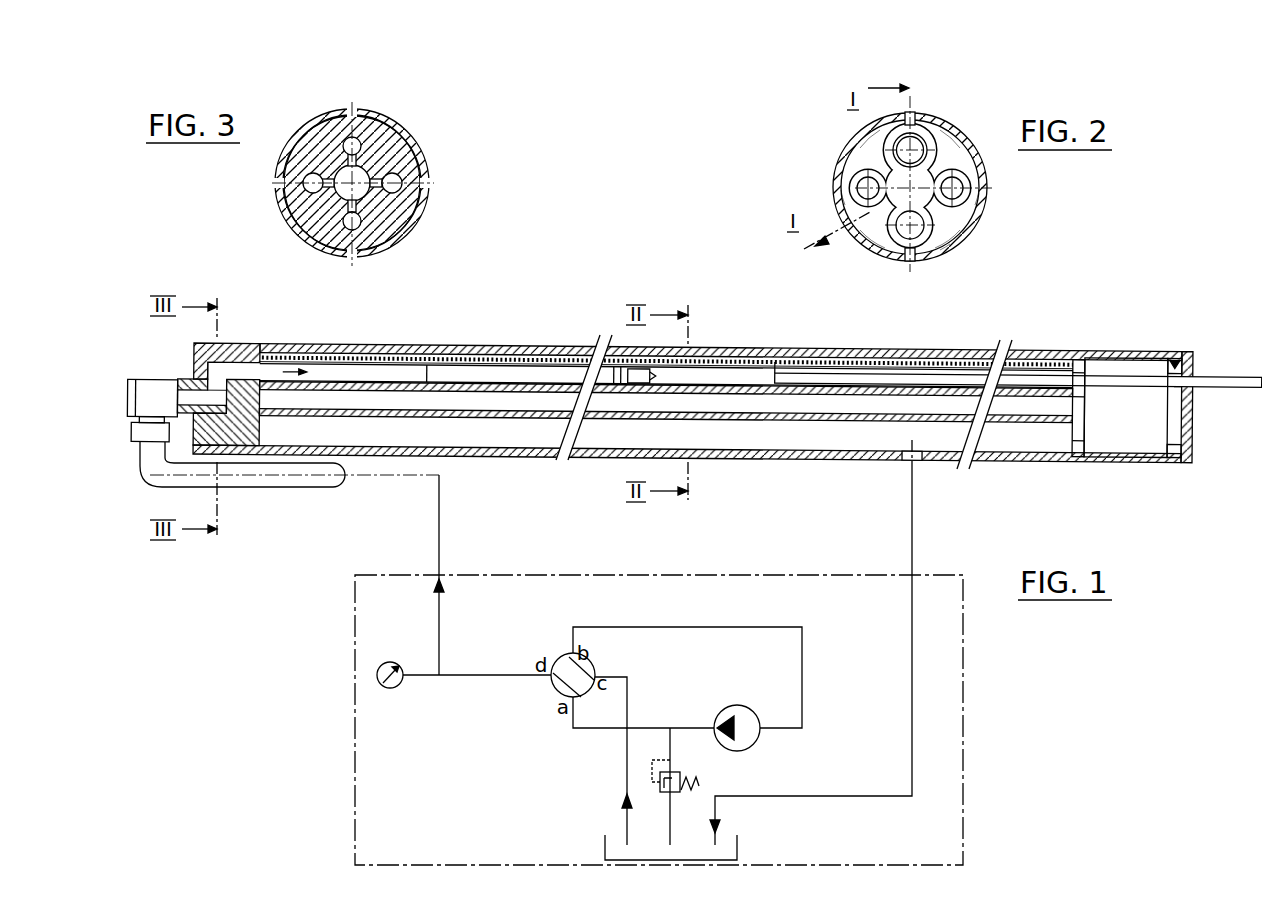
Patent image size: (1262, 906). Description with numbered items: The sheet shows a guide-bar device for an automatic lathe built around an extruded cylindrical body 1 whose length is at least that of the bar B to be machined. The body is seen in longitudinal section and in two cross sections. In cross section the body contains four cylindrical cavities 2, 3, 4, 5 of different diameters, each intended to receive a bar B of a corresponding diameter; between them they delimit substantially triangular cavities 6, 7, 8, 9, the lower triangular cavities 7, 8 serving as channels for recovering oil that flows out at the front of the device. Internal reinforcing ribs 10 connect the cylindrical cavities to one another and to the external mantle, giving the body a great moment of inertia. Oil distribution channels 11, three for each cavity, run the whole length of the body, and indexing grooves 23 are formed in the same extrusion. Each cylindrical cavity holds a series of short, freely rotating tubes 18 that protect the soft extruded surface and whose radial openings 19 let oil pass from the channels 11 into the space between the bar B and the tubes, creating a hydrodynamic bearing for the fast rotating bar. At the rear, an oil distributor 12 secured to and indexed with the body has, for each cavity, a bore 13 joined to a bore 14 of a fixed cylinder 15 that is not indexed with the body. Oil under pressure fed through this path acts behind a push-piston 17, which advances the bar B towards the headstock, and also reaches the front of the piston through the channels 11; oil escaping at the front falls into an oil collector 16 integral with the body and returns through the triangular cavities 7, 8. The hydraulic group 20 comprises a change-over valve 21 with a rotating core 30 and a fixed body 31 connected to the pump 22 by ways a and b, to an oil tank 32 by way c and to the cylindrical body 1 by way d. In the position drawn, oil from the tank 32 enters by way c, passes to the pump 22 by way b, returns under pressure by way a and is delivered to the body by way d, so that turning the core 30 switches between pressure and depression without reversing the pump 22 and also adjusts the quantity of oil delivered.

In FIG. 3, the cylindrical body 1 is at (418, 226).
In FIG. 2, the cylindrical body 1 is at (986, 233).
In FIG. 1, the cylindrical body 1 is at (396, 343).
In FIG. 2, the cylindrical cavity 2 is at (931, 152).
In FIG. 2, the cylindrical cavity 3 is at (857, 178).
In FIG. 2, the cylindrical cavity 4 is at (899, 246).
In FIG. 2, the cylindrical cavity 5 is at (962, 186).
In FIG. 2, the triangular cavity 6 is at (866, 150).
In FIG. 2, the triangular cavity 7 is at (868, 240).
In FIG. 2, the triangular cavity 8 is at (960, 220).
In FIG. 2, the triangular cavity 9 is at (955, 160).
In FIG. 2, the internal reinforcing rib 10 is at (970, 196).
In FIG. 2, the oil distribution channel 11 is at (840, 198).
In FIG. 3, the oil distributor 12 is at (314, 152).
In FIG. 1, the oil distributor 12 is at (249, 433).
In FIG. 3, the bore 13 is at (362, 140).
In FIG. 1, the bore 13 is at (255, 368).
In FIG. 3, the bore 14 is at (366, 177).
In FIG. 1, the bore 14 is at (195, 398).
In FIG. 3, the fixed cylinder 15 is at (306, 192).
In FIG. 1, the fixed cylinder 15 is at (182, 418).
In FIG. 1, the oil collector 16 is at (1128, 430).
In FIG. 1, the push-piston 17 is at (556, 372).
In FIG. 2, the tube 18 is at (914, 134).
In FIG. 1, the tube 18 is at (535, 354).
In FIG. 1, the radial opening 19 is at (452, 355).
In FIG. 1, the hydraulic group 20 is at (806, 577).
In FIG. 1, the hydraulic change-over valve 21 is at (555, 648).
In FIG. 1, the pump 22 is at (745, 712).
In FIG. 2, the indexing groove 23 is at (925, 283).
In FIG. 1, the rotating core 30 is at (584, 690).
In FIG. 1, the fixed body 31 is at (594, 665).
In FIG. 1, the oil tank 32 is at (740, 846).
In FIG. 1, the bar B is at (1211, 368).